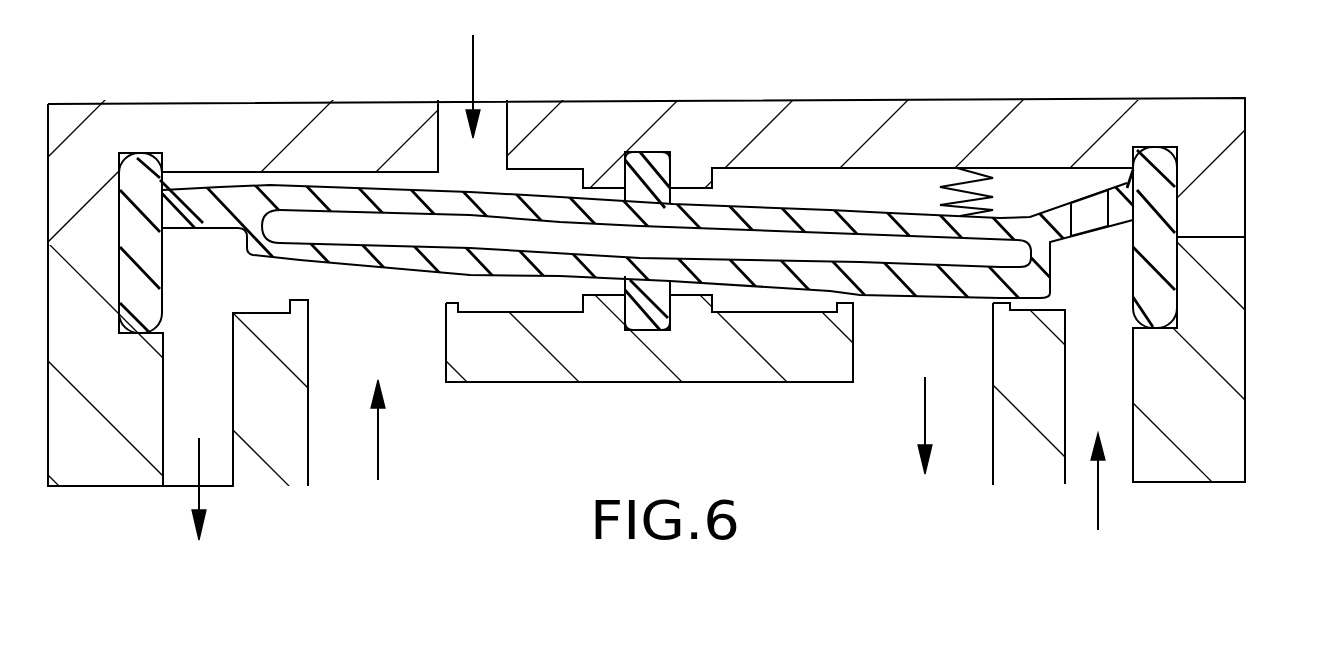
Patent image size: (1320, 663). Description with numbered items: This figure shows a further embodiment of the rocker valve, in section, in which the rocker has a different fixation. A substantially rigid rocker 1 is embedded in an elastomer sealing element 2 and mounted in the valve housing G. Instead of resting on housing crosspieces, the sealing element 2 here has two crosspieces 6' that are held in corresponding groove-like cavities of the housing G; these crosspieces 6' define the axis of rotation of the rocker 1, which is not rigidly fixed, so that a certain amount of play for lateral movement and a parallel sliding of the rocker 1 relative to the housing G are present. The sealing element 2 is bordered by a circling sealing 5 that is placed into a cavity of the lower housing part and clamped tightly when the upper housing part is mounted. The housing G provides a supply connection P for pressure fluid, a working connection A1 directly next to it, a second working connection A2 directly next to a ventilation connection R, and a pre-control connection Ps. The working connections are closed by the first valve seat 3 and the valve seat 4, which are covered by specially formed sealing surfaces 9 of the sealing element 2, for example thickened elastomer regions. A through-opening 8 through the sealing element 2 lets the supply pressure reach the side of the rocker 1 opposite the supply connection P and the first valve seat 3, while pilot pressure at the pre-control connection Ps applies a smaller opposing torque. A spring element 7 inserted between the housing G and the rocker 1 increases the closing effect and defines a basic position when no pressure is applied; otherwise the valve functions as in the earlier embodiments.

The rocker 1 is at (365, 218).
The elastomer sealing element 2 is at (766, 210).
The first valve seat 3 is at (995, 304).
The valve seat 4 is at (455, 304).
The circling sealing 5 is at (150, 158).
The crosspieces 6' is at (654, 243).
The spring element 7 is at (956, 169).
The through-opening 8 is at (1087, 218).
The sealing surfaces 9 is at (355, 276).
The valve housing G is at (1214, 124).
The pre-control connection Ps is at (473, 72).
The ventilation connection R is at (197, 496).
The second working connection A2 is at (378, 427).
The working connection A1 is at (925, 413).
The supply connection P is at (1098, 498).